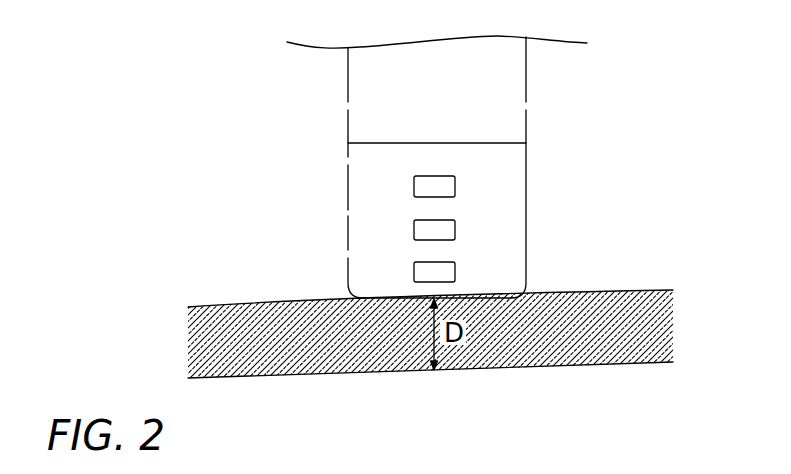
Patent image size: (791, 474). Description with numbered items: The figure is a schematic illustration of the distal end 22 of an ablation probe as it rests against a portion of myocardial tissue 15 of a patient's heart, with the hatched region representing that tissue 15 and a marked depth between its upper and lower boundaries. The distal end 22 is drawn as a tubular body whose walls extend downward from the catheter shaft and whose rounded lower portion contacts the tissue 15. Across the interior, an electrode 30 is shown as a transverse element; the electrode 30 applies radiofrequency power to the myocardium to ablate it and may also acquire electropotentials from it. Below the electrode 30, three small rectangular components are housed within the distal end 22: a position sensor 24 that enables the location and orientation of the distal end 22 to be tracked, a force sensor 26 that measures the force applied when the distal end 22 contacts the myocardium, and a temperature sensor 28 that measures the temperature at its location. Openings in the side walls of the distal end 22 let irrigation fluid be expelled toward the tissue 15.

The tissue 15 is at (212, 307).
The distal end 22 is at (532, 72).
The position sensor 24 is at (455, 183).
The force sensor 26 is at (455, 227).
The temperature sensor 28 is at (455, 269).
The electrode 30 is at (351, 146).